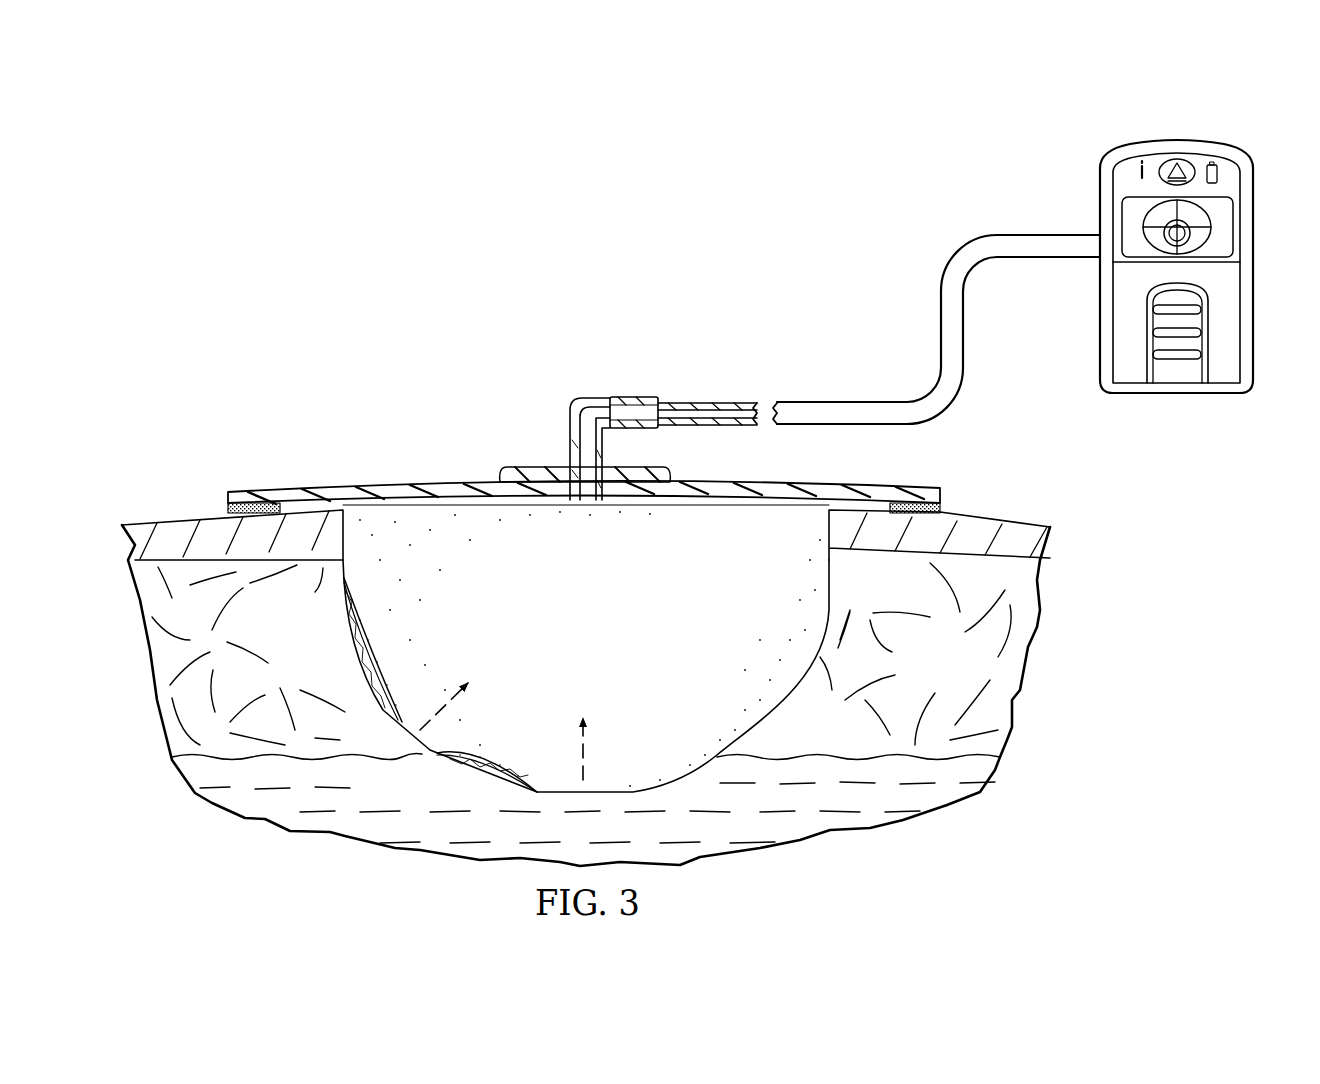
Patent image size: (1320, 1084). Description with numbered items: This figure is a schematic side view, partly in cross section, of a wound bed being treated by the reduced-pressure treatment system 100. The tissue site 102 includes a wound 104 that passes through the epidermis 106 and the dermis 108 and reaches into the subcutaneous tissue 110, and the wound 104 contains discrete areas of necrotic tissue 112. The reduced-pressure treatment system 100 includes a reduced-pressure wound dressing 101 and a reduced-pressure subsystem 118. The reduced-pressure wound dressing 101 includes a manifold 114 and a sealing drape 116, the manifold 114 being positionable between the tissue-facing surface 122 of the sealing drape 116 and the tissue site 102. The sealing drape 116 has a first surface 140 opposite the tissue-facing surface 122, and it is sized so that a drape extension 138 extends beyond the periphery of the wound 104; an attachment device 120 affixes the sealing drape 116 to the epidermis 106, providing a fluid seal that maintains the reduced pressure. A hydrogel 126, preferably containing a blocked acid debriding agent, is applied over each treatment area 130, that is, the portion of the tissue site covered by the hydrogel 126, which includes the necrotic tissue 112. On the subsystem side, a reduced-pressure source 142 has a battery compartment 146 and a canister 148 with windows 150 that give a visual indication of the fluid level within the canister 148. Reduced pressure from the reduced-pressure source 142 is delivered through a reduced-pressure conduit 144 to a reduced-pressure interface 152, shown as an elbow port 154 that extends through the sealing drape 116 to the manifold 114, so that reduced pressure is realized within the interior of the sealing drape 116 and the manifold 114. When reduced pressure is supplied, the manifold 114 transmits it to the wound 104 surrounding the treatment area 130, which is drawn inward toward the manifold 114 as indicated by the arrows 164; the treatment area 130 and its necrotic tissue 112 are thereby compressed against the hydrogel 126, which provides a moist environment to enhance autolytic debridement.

The reduced-pressure treatment system 100 is at (478, 273).
The reduced-pressure wound dressing 101 is at (547, 429).
The tissue site 102 is at (785, 703).
The wound 104 is at (832, 573).
The epidermis 106 is at (1012, 523).
The dermis 108 is at (957, 670).
The subcutaneous tissue 110 is at (605, 835).
The necrotic tissue 112 is at (350, 645).
The manifold 114 is at (605, 643).
The sealing drape 116 is at (578, 469).
The reduced-pressure subsystem 118 is at (1150, 262).
The attachment device 120 is at (228, 507).
The tissue-facing surface 122 is at (396, 493).
The hydrogel 126 is at (376, 648).
The treatment area 130 is at (402, 707).
The drape extension 138 is at (865, 489).
The first surface 140 is at (258, 491).
The reduced-pressure source 142 is at (1238, 148).
The reduced-pressure conduit 144 is at (942, 323).
The battery compartment 146 is at (1130, 207).
The canister 148 is at (1178, 374).
The windows 150 is at (1150, 310).
The reduced-pressure interface 152 is at (576, 397).
The elbow port 154 is at (624, 397).
The arrows 164 is at (478, 700).